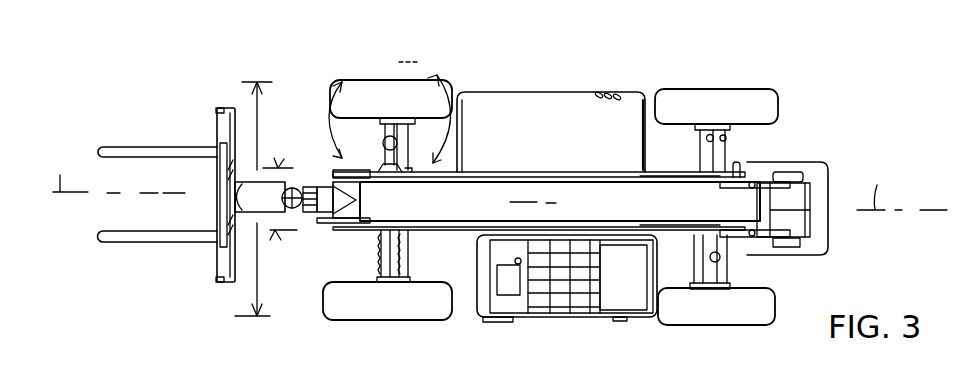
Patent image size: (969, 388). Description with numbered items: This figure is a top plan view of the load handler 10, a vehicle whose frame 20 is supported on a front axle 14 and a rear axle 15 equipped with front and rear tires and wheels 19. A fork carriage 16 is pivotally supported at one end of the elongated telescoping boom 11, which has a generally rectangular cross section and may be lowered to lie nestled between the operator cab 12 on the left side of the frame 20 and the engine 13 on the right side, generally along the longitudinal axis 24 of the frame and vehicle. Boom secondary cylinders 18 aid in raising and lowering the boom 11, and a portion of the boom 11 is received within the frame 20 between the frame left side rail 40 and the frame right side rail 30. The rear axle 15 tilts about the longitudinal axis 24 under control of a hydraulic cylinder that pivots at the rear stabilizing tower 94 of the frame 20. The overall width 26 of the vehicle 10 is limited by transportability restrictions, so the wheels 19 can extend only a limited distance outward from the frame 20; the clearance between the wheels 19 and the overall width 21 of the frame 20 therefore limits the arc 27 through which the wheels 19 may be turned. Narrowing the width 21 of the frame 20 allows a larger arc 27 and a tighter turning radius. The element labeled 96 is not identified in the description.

The load handler 10 is at (312, 72).
The telescoping boom 11 is at (318, 232).
The operator cab 12 is at (618, 302).
The engine 13 is at (547, 98).
The front axle 14 is at (380, 248).
The rear axle 15 is at (715, 157).
The fork carriage 16 is at (215, 258).
The boom secondary cylinders 18 is at (733, 223).
The tires and wheels 19 is at (440, 76).
The vehicle frame 20 is at (547, 175).
The overall width of the frame 21 is at (278, 168).
The longitudinal axis 24 is at (499, 179).
The overall width of the vehicle 26 is at (253, 115).
The arc 27 is at (342, 82).
The frame right side rail 30 is at (437, 166).
The frame left side rail 40 is at (460, 233).
The rear stabilizing tower 94 is at (728, 253).
The front steering knuckle 96 is at (383, 164).